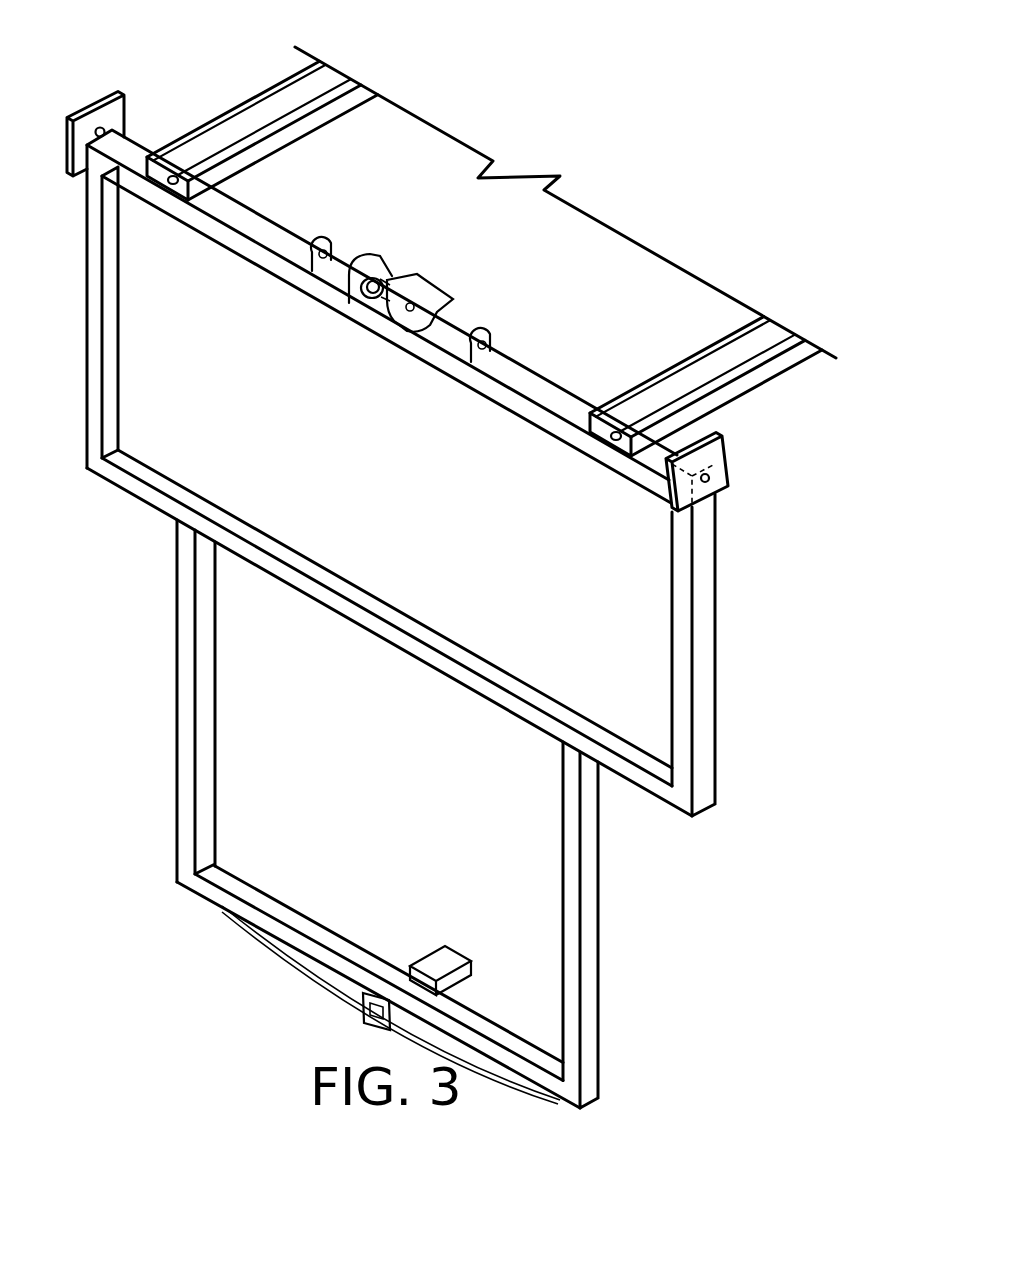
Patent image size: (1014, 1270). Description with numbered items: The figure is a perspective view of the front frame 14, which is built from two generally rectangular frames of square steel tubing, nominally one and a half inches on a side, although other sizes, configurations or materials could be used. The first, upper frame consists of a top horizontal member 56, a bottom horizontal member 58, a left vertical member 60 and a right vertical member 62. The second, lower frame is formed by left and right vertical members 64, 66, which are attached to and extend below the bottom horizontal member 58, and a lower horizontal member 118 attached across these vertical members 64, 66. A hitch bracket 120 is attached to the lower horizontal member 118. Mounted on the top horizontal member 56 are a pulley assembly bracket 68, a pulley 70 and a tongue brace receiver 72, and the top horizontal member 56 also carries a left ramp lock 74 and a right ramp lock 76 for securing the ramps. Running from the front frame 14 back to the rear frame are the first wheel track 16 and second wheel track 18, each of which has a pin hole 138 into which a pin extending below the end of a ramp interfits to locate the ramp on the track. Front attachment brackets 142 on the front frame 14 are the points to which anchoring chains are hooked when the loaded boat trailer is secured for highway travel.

The front frame 14 is at (820, 550).
The first wheel track 16 is at (253, 128).
The second wheel track 18 is at (744, 362).
The top horizontal member 56 is at (460, 368).
The bottom horizontal member 58 is at (421, 473).
The left vertical member 60 is at (703, 614).
The right vertical member 62 is at (92, 322).
The left vertical member 64 is at (597, 908).
The right vertical member 66 is at (178, 722).
The pulley assembly bracket 68 is at (440, 313).
The pulley 70 is at (378, 300).
The tongue brace receiver 72 is at (432, 272).
The left ramp lock 74 is at (498, 340).
The right ramp lock 76 is at (314, 276).
The lower horizontal member 118 is at (340, 940).
The hitch bracket 120 is at (438, 950).
The pin hole 138 is at (153, 185).
The front attachment bracket 142 is at (95, 110).